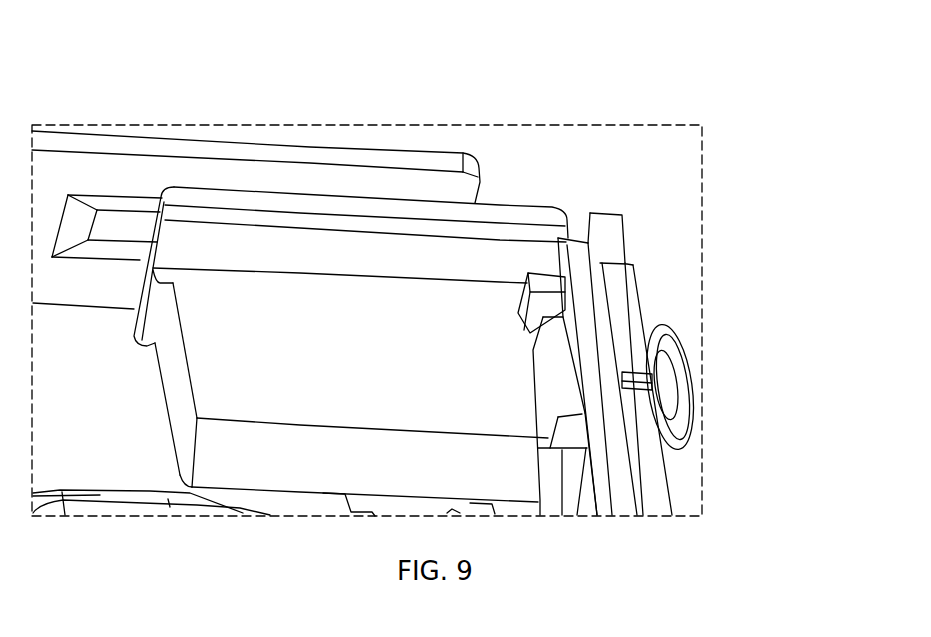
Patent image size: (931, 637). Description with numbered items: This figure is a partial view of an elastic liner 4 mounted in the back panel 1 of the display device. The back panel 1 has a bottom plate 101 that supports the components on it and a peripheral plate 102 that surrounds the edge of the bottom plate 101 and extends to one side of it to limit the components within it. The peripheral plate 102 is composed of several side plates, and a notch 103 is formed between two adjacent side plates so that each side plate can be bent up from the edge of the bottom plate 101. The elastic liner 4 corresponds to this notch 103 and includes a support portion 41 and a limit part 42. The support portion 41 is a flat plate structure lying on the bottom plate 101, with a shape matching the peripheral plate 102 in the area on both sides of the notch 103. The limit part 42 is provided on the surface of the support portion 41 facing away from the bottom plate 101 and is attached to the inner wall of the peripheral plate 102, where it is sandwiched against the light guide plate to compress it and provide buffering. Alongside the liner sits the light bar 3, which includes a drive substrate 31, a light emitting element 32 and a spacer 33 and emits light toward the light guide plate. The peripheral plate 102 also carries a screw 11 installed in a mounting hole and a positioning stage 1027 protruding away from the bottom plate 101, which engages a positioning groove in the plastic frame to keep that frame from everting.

The back panel 1 is at (178, 53).
The bottom plate 101 is at (65, 353).
The peripheral plate 102 is at (118, 148).
The notch 103 is at (508, 180).
The positioning stage 1027 is at (633, 357).
The screw 11 is at (683, 347).
The light bar 3 is at (762, 189).
The drive substrate 31 is at (585, 320).
The light emitting element 32 is at (560, 377).
The spacer 33 is at (545, 283).
The elastic liner 4 is at (337, 47).
The support portion 41 is at (278, 315).
The limit part 42 is at (230, 220).